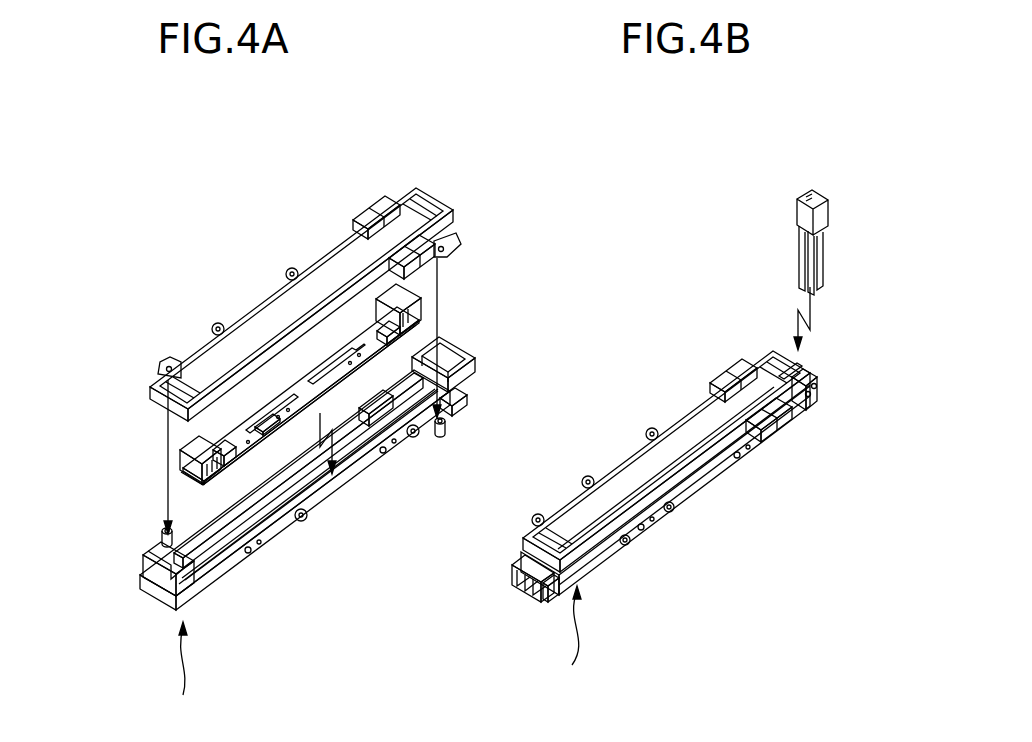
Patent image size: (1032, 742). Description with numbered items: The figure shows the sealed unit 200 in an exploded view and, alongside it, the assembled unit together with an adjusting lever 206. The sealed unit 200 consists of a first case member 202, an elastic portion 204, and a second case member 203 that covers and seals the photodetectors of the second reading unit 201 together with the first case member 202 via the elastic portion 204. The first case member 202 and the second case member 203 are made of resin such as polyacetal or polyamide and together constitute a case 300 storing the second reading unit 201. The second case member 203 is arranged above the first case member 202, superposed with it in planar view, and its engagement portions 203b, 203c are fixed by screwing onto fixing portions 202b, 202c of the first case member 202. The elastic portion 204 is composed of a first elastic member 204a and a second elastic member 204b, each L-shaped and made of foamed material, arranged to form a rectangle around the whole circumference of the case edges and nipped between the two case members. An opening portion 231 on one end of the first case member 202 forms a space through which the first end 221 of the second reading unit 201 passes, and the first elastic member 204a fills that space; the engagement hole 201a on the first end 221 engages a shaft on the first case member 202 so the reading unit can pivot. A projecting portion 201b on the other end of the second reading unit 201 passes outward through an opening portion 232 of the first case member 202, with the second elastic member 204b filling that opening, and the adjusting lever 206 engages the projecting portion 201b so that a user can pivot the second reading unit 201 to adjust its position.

In FIG. 4A, the sealed unit 200 is at (165, 673).
In FIG. 4B, the sealed unit 200 is at (565, 639).
In FIG. 4A, the second reading unit 201 is at (305, 395).
In FIG. 4A, the engagement hole 201a is at (178, 481).
In FIG. 4A, the projecting portion 201b is at (416, 304).
In FIG. 4A, the first case member 202 is at (320, 472).
In FIG. 4B, the first case member 202 is at (520, 560).
In FIG. 4A, the fixing portion 202b is at (162, 533).
In FIG. 4A, the fixing portion 202c is at (448, 436).
In FIG. 4A, the second case member 203 is at (335, 337).
In FIG. 4B, the second case member 203 is at (683, 414).
In FIG. 4A, the engagement portion 203b is at (166, 364).
In FIG. 4A, the engagement portion 203c is at (448, 254).
In FIG. 4A, the elastic portion 204 is at (136, 458).
In FIG. 4B, the elastic portion 204 is at (724, 452).
In FIG. 4A, the first elastic member 204a is at (178, 464).
In FIG. 4B, the first elastic member 204a is at (545, 592).
In FIG. 4A, the second elastic member 204b is at (420, 331).
In FIG. 4B, the second elastic member 204b is at (812, 378).
In FIG. 4B, the adjusting lever 206 is at (803, 206).
In FIG. 4B, the first end 221 is at (515, 568).
In FIG. 4A, the opening portion 231 is at (185, 566).
In FIG. 4A, the opening portion 232 is at (432, 377).
In FIG. 4B, the case 300 is at (665, 452).